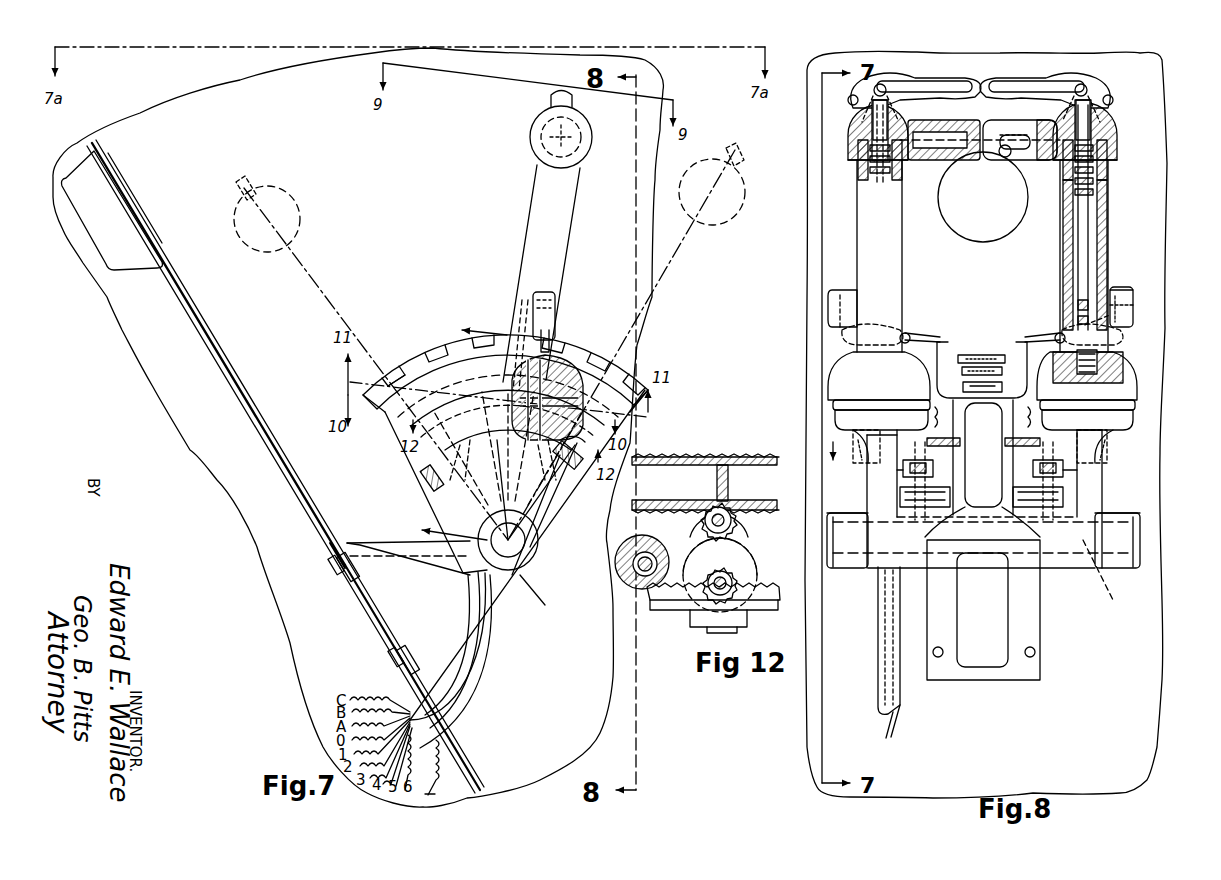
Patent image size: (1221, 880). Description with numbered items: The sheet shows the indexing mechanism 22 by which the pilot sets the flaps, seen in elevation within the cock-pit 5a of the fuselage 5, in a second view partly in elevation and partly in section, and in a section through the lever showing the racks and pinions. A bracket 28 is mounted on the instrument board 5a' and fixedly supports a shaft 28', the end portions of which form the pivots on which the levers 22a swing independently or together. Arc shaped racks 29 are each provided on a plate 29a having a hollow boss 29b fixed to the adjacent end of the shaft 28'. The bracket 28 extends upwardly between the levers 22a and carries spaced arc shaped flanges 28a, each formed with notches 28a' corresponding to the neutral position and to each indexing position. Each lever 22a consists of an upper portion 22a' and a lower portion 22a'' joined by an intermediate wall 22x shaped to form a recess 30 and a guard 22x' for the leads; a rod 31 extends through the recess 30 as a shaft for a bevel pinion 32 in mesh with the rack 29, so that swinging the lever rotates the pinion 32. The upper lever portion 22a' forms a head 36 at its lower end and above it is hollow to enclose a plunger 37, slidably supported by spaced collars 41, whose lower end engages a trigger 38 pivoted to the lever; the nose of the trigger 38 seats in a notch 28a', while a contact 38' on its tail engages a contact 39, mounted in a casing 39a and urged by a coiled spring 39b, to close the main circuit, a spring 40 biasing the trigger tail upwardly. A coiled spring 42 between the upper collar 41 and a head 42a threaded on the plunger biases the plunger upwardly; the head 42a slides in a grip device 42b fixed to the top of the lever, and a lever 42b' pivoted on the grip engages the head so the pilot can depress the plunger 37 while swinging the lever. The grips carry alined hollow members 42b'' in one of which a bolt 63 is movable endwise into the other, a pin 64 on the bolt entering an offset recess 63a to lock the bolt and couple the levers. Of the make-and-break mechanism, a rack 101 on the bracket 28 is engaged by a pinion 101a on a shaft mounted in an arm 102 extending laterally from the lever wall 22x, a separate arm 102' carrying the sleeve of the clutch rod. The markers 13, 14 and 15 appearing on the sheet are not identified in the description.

In FIG. 7, the fuselage 5 is at (155, 395).
In FIG. 7, the cock-pit 5a is at (206, 354).
In FIG. 7, the instrument board 5a' is at (312, 540).
In FIG. 7, the pivot pin 14 is at (489, 330).
In FIG. 7, the lever 22a is at (538, 241).
In FIG. 8, the lever 22a is at (945, 295).
In FIG. 7, the recess 30 is at (482, 425).
In FIG. 7, the head 36 is at (576, 368).
In FIG. 8, the head 36 is at (828, 380).
In FIG. 7, the arc shaped flanges 28a is at (498, 399).
In FIG. 8, the arc shaped flanges 28a is at (982, 328).
In FIG. 7, the notches 28a' is at (409, 353).
In FIG. 7, the indexing mechanism 22 is at (496, 555).
In FIG. 8, the indexing mechanism 22 is at (998, 484).
In FIG. 7, the pivot axis 15 is at (486, 443).
In FIG. 7, the guard 22x' is at (408, 483).
In FIG. 8, the guard 22x' is at (975, 652).
In FIG. 7, the arc shaped racks 29 is at (580, 462).
In FIG. 12, the arc shaped racks 29 is at (672, 610).
In FIG. 8, the arc shaped racks 29 is at (858, 445).
In FIG. 7, the plate 29a is at (558, 470).
In FIG. 8, the plate 29a is at (1113, 493).
In FIG. 7, the hollow boss 29b is at (500, 578).
In FIG. 8, the hollow boss 29b is at (1133, 562).
In FIG. 7, the shaft 28' is at (541, 595).
In FIG. 8, the shaft 28' is at (1109, 574).
In FIG. 7, the bracket 28 is at (405, 668).
In FIG. 12, the bracket 28 is at (739, 483).
In FIG. 8, the bracket 28 is at (998, 610).
In FIG. 12, the rack 101 is at (702, 444).
In FIG. 12, the intermediate wall 22x is at (705, 531).
In FIG. 8, the intermediate wall 22x is at (1025, 496).
In FIG. 12, the bevel pinion 32 is at (737, 574).
In FIG. 12, the rod 31 is at (727, 595).
In FIG. 8, the lever 42b' is at (996, 77).
In FIG. 8, the hollow members 42b'' is at (980, 109).
In FIG. 8, the head 42a is at (868, 108).
In FIG. 8, the grip device 42b is at (983, 149).
In FIG. 8, the plunger 37 is at (883, 187).
In FIG. 8, the coiled spring 42 is at (1107, 172).
In FIG. 8, the collars 41 is at (1106, 207).
In FIG. 8, the upper portion 22a' is at (986, 256).
In FIG. 8, the bolt 63 is at (973, 145).
In FIG. 8, the pin 64 is at (1000, 163).
In FIG. 8, the offset recess 63a is at (1005, 158).
In FIG. 8, the casing 39a is at (1133, 296).
In FIG. 8, the coiled spring 39b is at (1133, 308).
In FIG. 8, the contact 39 is at (1133, 322).
In FIG. 8, the trigger 38 is at (982, 321).
In FIG. 8, the contact 38' is at (1134, 331).
In FIG. 8, the spring 40 is at (1095, 355).
In FIG. 8, the connector 13 is at (928, 413).
In FIG. 8, the pinion 101a is at (947, 442).
In FIG. 8, the arm 102 is at (983, 481).
In FIG. 8, the arm 102' is at (981, 492).
In FIG. 8, the lower portion 22a'' is at (981, 485).